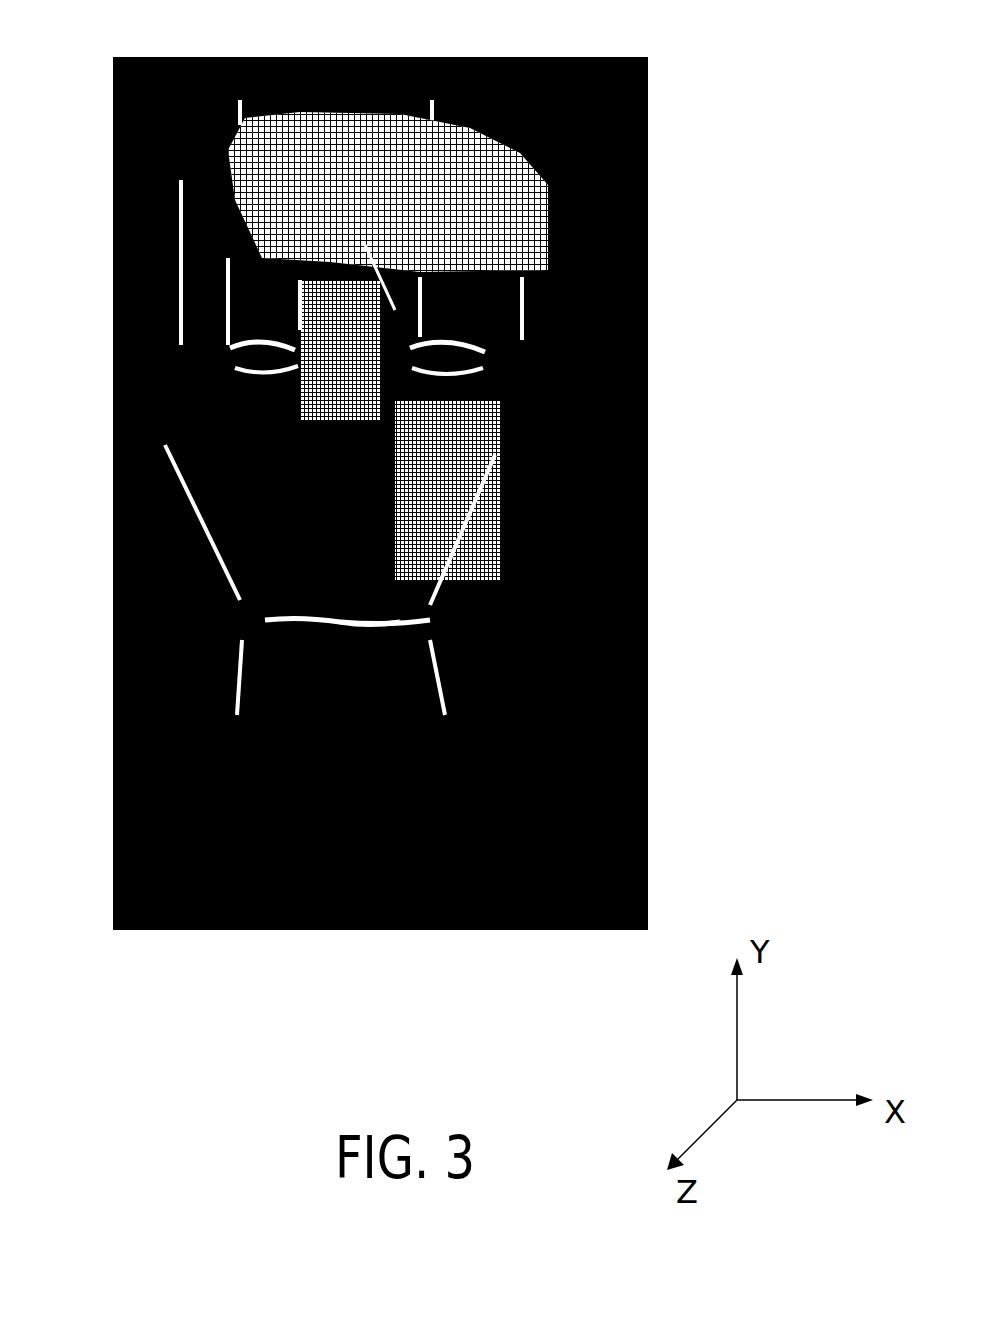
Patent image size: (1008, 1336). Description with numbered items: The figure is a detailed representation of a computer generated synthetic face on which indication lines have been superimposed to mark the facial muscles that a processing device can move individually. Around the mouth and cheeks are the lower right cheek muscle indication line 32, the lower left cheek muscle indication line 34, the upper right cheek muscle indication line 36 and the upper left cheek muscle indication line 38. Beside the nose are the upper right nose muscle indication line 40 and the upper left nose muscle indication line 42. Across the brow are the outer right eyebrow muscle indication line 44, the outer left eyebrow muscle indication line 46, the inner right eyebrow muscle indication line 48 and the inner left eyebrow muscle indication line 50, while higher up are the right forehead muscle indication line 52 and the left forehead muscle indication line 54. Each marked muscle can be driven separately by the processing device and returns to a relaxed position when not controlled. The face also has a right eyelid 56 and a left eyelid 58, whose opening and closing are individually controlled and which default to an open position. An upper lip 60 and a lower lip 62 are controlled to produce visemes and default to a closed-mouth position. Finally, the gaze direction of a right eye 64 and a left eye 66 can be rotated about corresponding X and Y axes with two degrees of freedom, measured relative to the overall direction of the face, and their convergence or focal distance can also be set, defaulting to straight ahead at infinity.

The lower right cheek muscle indication line 32 is at (440, 665).
The lower left cheek muscle indication line 34 is at (240, 665).
The upper right cheek muscle indication line 36 is at (455, 575).
The upper left cheek muscle indication line 38 is at (210, 526).
The upper right nose muscle indication line 40 is at (400, 270).
The upper left nose muscle indication line 42 is at (268, 240).
The outer right eyebrow muscle indication line 44 is at (535, 280).
The outer left eyebrow muscle indication line 46 is at (185, 246).
The inner right eyebrow muscle indication line 48 is at (462, 172).
The inner left eyebrow muscle indication line 50 is at (235, 160).
The right forehead muscle indication line 52 is at (370, 240).
The left forehead muscle indication line 54 is at (315, 235).
The right eyelid 56 is at (470, 348).
The left eyelid 58 is at (265, 325).
The upper lip 60 is at (400, 610).
The lower lip 62 is at (378, 630).
The right eye 64 is at (480, 366).
The left eye 66 is at (300, 365).